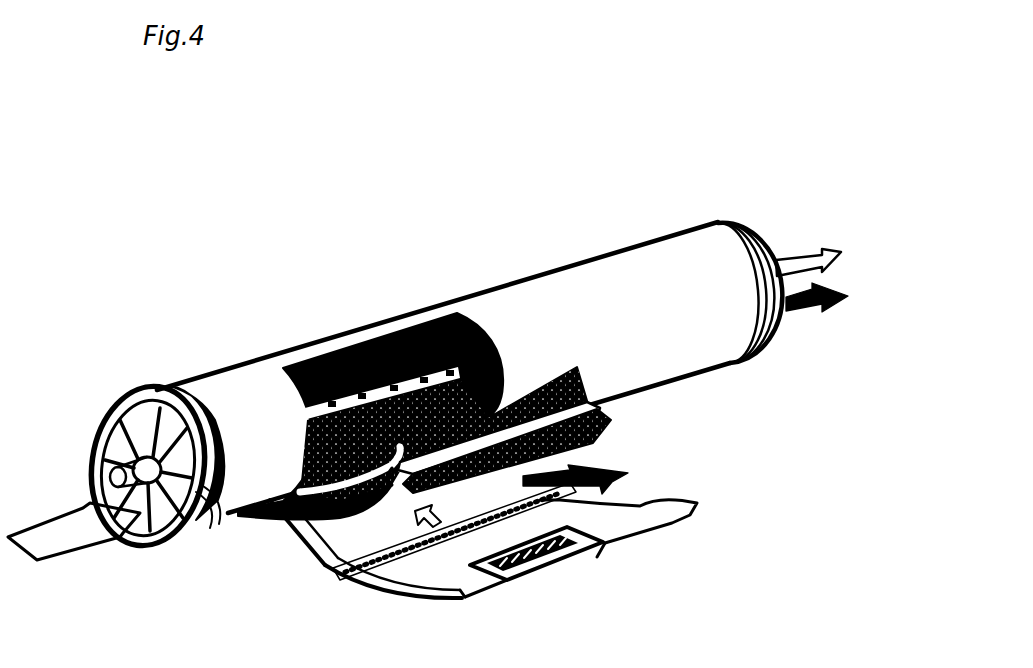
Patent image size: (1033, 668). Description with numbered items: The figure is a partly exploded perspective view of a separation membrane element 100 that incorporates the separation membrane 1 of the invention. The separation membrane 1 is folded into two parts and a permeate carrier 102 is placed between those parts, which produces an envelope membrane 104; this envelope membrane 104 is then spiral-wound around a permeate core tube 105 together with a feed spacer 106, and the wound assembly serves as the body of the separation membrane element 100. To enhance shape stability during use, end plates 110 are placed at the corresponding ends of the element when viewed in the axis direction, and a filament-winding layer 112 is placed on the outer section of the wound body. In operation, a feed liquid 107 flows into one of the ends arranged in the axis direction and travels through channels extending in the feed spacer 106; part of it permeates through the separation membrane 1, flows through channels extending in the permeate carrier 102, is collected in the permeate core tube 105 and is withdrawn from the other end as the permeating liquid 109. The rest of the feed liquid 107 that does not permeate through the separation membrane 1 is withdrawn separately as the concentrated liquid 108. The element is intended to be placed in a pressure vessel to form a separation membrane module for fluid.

The separation membrane element 100 is at (702, 154).
The filament-winding layer 112 is at (568, 285).
The permeate core tube 105 is at (346, 344).
The feed spacer 106 is at (607, 414).
The end plates 110 is at (172, 540).
The permeating liquid 109 is at (799, 258).
The concentrated liquid 108 is at (845, 299).
The feed liquid 107 is at (47, 533).
The separation membrane 1 is at (652, 520).
The permeate carrier 102 is at (560, 567).
The envelope membrane 104 is at (617, 521).